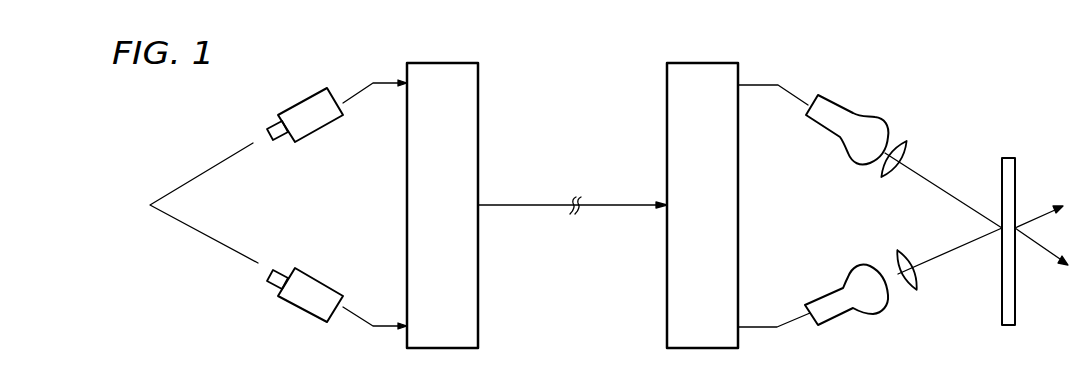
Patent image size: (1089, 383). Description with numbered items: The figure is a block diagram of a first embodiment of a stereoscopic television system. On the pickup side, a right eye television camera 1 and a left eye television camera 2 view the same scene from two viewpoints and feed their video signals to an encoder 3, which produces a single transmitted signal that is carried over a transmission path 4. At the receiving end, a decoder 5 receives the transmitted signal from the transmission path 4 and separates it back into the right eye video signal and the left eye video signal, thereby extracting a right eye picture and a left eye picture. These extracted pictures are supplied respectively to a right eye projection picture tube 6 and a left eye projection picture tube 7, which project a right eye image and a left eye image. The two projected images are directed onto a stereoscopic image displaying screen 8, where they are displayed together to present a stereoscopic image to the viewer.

The right eye television camera 1 is at (308, 97).
The left eye television camera 2 is at (320, 280).
The encoder 3 is at (437, 63).
The transmission path 4 is at (518, 204).
The decoder 5 is at (703, 63).
The right eye projection picture tube 6 is at (840, 103).
The left eye projection picture tube 7 is at (835, 287).
The stereoscopic image displaying screen 8 is at (1007, 158).